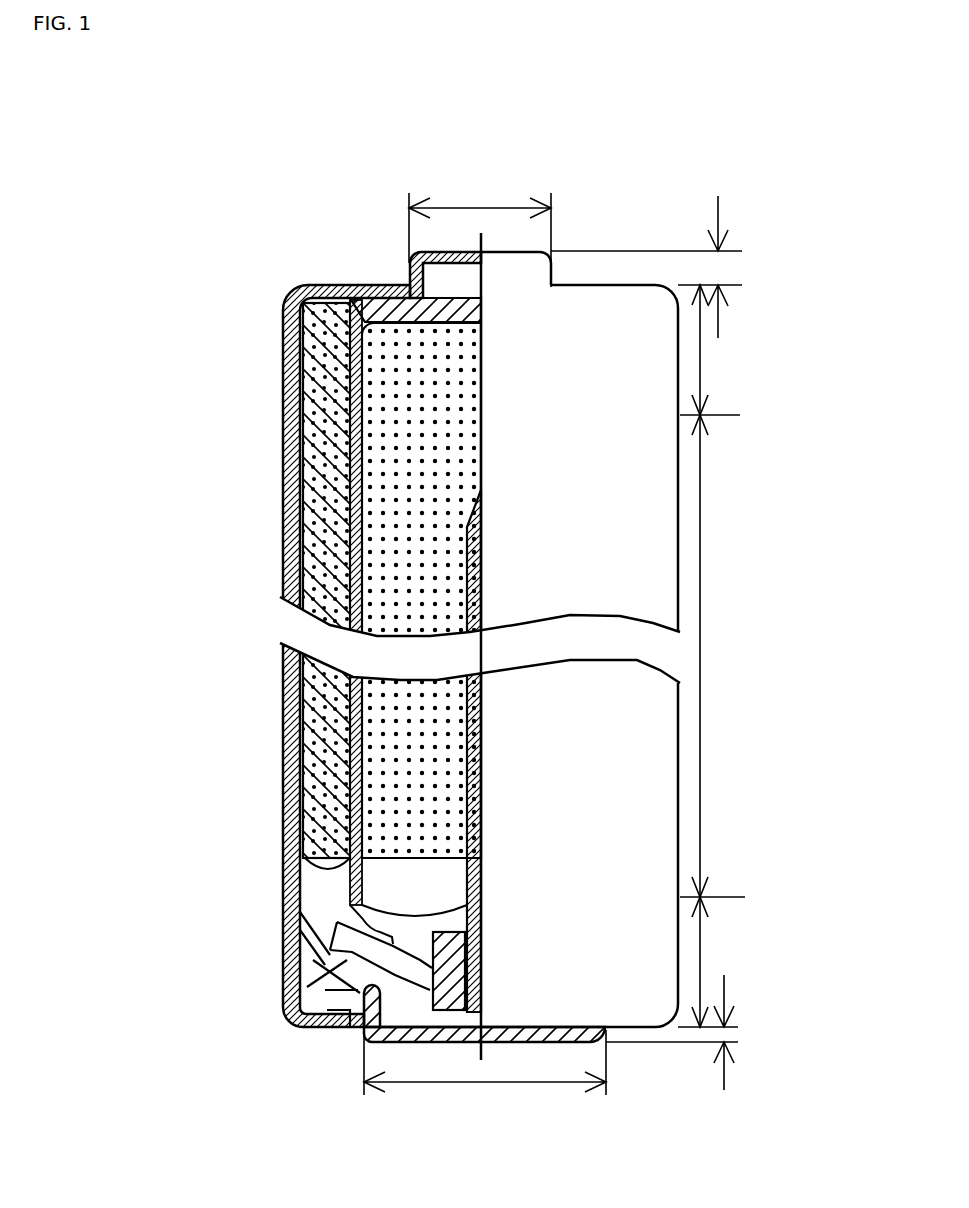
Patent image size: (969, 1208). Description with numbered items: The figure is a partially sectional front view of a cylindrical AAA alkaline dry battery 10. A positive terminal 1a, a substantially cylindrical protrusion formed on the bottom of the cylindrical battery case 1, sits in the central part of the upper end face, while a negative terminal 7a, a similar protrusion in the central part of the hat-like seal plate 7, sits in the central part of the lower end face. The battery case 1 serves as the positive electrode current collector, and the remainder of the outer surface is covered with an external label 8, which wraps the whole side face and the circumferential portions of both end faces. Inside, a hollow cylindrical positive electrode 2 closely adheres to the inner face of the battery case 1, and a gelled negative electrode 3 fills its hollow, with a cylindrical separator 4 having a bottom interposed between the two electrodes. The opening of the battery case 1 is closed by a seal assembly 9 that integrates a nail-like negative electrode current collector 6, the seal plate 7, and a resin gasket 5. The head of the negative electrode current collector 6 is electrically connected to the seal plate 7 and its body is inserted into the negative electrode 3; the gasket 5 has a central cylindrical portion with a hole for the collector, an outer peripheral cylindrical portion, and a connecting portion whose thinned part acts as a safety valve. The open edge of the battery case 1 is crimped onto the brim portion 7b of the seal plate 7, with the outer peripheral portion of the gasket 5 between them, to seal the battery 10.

The battery case 1 is at (300, 607).
The positive terminal 1a is at (418, 252).
The positive electrode 2 is at (283, 447).
The negative electrode 3 is at (403, 517).
The separator 4 is at (350, 875).
The gasket 5 is at (320, 1000).
The negative electrode current collector 6 is at (337, 905).
The seal plate 7 is at (193, 1003).
The negative terminal 7a is at (393, 1047).
The circumferential portion (brim portion) 7b is at (300, 1015).
The external label 8 is at (285, 340).
The seal assembly 9 is at (143, 918).
The alkaline dry battery 10 is at (316, 173).